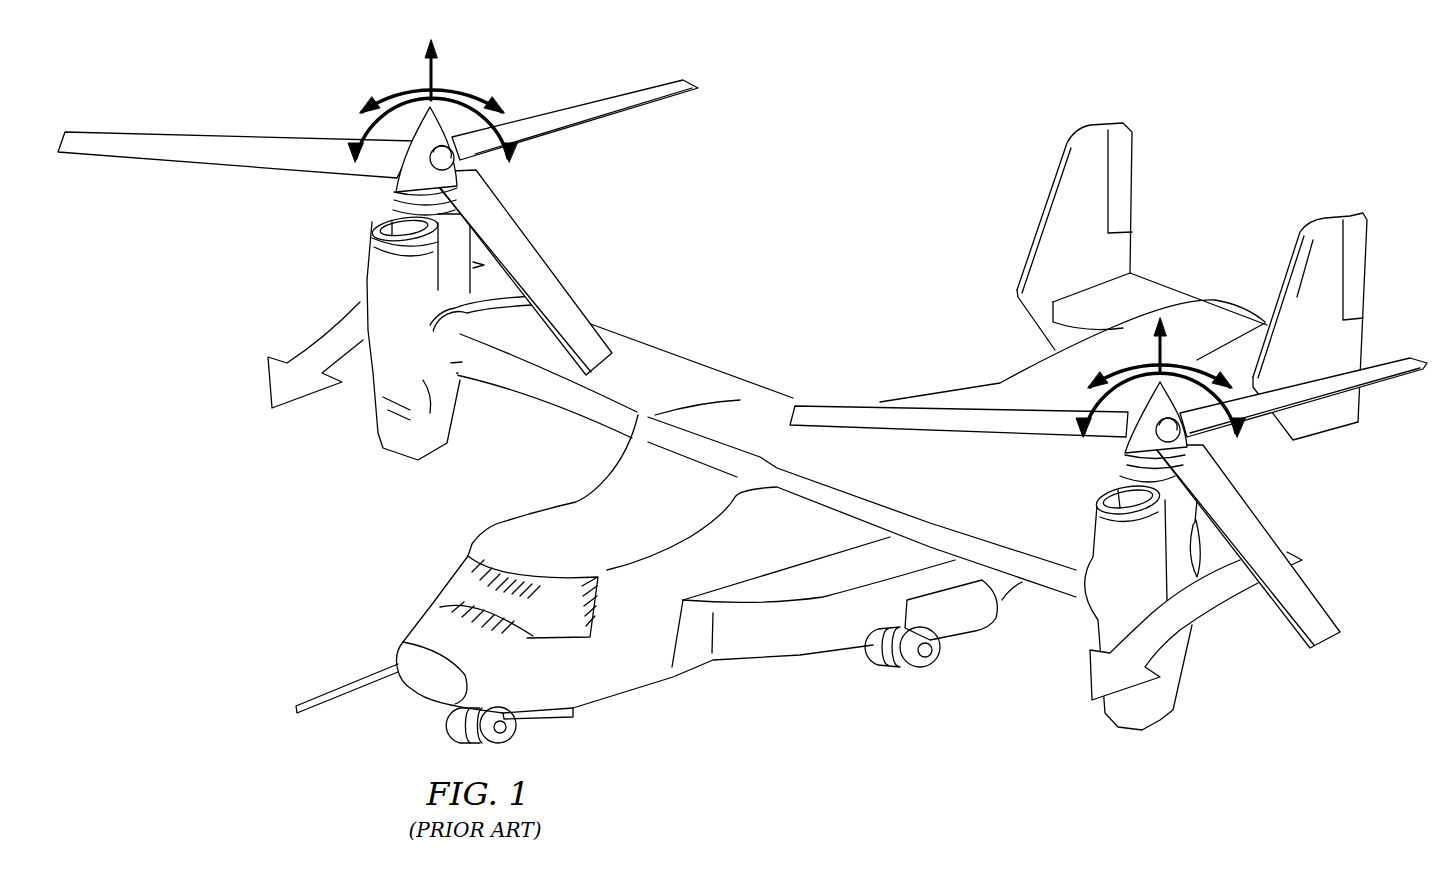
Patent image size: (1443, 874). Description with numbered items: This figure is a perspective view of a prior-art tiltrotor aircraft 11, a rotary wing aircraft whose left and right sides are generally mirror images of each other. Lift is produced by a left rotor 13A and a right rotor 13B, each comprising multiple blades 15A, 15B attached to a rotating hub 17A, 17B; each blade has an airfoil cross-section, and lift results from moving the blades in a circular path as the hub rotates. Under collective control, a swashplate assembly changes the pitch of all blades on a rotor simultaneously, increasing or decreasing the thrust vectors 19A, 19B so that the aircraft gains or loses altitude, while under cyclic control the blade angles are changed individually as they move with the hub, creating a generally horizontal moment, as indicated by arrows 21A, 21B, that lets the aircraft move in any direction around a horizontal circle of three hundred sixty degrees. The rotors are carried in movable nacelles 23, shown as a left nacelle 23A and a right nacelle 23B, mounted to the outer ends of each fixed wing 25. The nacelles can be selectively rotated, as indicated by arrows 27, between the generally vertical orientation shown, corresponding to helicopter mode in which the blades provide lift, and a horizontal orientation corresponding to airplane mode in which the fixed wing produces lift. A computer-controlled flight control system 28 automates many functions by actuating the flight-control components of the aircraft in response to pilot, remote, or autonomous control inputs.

The tiltrotor aircraft 11 is at (742, 391).
The left rotor 13A is at (1216, 446).
The right rotor 13B is at (386, 188).
The left rotor blade 15A is at (1327, 648).
The right rotor blade 15B is at (603, 119).
The left rotor hub 17A is at (1098, 450).
The right rotor hub 17B is at (420, 133).
The left thrust vector 19A is at (1162, 350).
The right thrust vector 19B is at (434, 74).
The left cyclic moment arrows 21A is at (1090, 400).
The right cyclic moment arrows 21B is at (365, 130).
The nacelle 23 is at (650, 684).
The left nacelle 23A is at (375, 420).
The right nacelle 23B is at (1187, 680).
The fixed wing 25 is at (685, 360).
The nacelle rotation arrows 27 is at (1088, 676).
The flight control system 28 is at (482, 608).